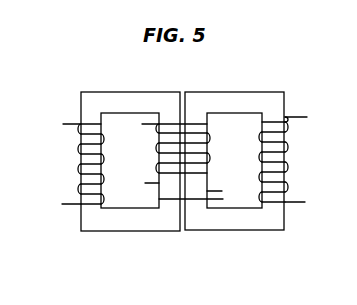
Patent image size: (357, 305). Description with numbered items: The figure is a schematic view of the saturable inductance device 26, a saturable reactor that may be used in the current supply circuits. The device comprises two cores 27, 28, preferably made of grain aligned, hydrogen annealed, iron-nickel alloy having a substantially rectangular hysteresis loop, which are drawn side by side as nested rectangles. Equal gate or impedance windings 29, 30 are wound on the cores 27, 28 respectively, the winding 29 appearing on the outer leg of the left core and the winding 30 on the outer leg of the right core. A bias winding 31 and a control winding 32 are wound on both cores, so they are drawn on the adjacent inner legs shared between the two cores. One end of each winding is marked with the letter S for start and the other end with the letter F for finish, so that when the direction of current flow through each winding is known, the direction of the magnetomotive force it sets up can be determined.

The saturable inductance device 26 is at (193, 80).
The core 27 is at (113, 91).
The core 28 is at (240, 91).
The gate or impedance winding 29 is at (80, 156).
The gate or impedance winding 30 is at (285, 160).
The bias winding 31 is at (158, 148).
The control winding 32 is at (158, 198).